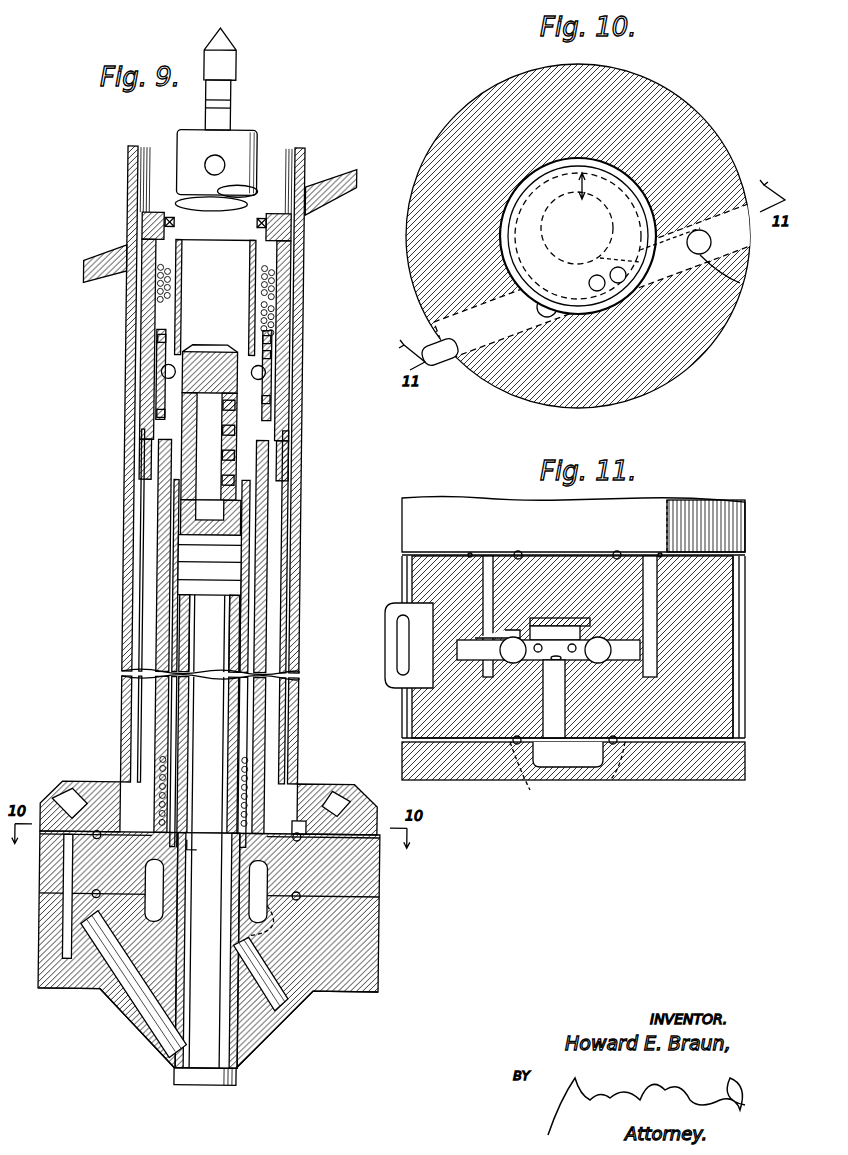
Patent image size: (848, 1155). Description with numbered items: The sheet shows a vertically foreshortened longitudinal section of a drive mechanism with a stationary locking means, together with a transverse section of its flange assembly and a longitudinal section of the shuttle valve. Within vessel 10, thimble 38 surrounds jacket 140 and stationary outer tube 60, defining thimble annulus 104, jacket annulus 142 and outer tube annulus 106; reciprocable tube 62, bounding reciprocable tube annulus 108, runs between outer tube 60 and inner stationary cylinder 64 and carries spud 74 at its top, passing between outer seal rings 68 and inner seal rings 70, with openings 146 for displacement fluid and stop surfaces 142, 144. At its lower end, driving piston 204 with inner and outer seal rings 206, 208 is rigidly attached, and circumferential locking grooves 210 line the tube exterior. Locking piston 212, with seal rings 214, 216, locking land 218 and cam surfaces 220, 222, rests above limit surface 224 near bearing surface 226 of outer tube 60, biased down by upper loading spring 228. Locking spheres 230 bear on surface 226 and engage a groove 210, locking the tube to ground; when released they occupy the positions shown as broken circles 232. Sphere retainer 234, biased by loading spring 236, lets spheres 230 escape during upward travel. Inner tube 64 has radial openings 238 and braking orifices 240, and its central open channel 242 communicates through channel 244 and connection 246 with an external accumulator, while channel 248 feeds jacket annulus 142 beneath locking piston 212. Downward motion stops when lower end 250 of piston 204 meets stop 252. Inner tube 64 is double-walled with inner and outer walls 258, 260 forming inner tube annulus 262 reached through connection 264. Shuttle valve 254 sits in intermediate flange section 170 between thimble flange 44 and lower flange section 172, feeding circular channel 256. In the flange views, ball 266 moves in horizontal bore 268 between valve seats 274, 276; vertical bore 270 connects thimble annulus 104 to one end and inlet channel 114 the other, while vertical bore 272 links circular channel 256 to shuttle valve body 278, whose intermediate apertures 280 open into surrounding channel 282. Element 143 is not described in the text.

In FIG. 9, the vessel 10 is at (335, 172).
In FIG. 9, the thimble 38 is at (130, 182).
In FIG. 9, the thimble flange 44 is at (78, 783).
In FIG. 10, the thimble flange 44 is at (700, 125).
In FIG. 11, the thimble flange 44 is at (740, 512).
In FIG. 9, the stationary outer tube 60 is at (272, 515).
In FIG. 9, the reciprocable tube 62 is at (250, 262).
In FIG. 9, the inner stationary cylinder 64 is at (168, 448).
In FIG. 9, the outer seal rings 68 is at (150, 222).
In FIG. 9, the inner seal rings 70 is at (205, 352).
In FIG. 9, the spud 74 is at (236, 62).
In FIG. 9, the thimble annulus 104 is at (305, 257).
In FIG. 10, the thimble annulus 104 is at (500, 251).
In FIG. 9, the outer tube annulus 106 is at (252, 542).
In FIG. 9, the reciprocable tube annulus 108 is at (248, 635).
In FIG. 9, the inlet channel 114 is at (345, 795).
In FIG. 10, the inlet channel 114 is at (742, 284).
In FIG. 11, the inlet channel 114 is at (650, 612).
In FIG. 9, the jacket 140 is at (288, 490).
In FIG. 9, the jacket annulus 142 is at (162, 576).
In FIG. 9, the collar 143 is at (288, 692).
In FIG. 9, the stop surface 144 is at (215, 442).
In FIG. 9, the openings 146 is at (225, 160).
In FIG. 9, the intermediate flange section 170 is at (375, 885).
In FIG. 11, the intermediate flange section 170 is at (740, 697).
In FIG. 9, the lower flange section 172 is at (370, 965).
In FIG. 11, the lower flange section 172 is at (702, 770).
In FIG. 9, the driving piston 204 is at (254, 745).
In FIG. 9, the inner seal ring 206 is at (212, 853).
In FIG. 9, the outer seal ring 208 is at (175, 770).
In FIG. 9, the locking grooves 210 is at (232, 352).
In FIG. 9, the locking piston 212 is at (160, 395).
In FIG. 9, the inner seal ring 214 is at (266, 425).
In FIG. 9, the outer seal ring 216 is at (265, 360).
In FIG. 9, the locking land 218 is at (268, 335).
In FIG. 9, the cam surface 220 is at (162, 332).
In FIG. 9, the cam surface 222 is at (162, 420).
In FIG. 9, the locking piston limit surface 224 is at (250, 470).
In FIG. 9, the bearing surface 226 is at (262, 400).
In FIG. 9, the upper loading spring 228 is at (276, 303).
In FIG. 9, the locking spheres 230 is at (164, 372).
In FIG. 9, the broken circles 232 is at (268, 372).
In FIG. 9, the sphere retainer 234 is at (158, 296).
In FIG. 9, the loading spring 236 is at (282, 283).
In FIG. 9, the radial openings 238 is at (192, 505).
In FIG. 9, the braking orifices 240 is at (190, 478).
In FIG. 9, the central open channel 242 is at (205, 655).
In FIG. 9, the channel 244 is at (140, 1000).
In FIG. 9, the connection 246 is at (70, 800).
In FIG. 9, the channel 248 is at (80, 855).
In FIG. 9, the lower end 250 is at (268, 820).
In FIG. 9, the stop 252 is at (200, 880).
In FIG. 9, the shuttle valve 254 is at (278, 905).
In FIG. 9, the circular channel 256 is at (258, 935).
In FIG. 10, the circular channel 256 is at (588, 175).
In FIG. 11, the circular channel 256 is at (545, 770).
In FIG. 9, the inner wall 258 is at (195, 612).
In FIG. 9, the outer wall 260 is at (192, 636).
In FIG. 9, the inner tube annulus 262 is at (195, 690).
In FIG. 9, the connection 264 is at (283, 1012).
In FIG. 10, the ball 266 is at (605, 290).
In FIG. 11, the ball 266 is at (515, 663).
In FIG. 10, the horizontal bore 268 is at (712, 330).
In FIG. 11, the horizontal bore 268 is at (595, 663).
In FIG. 10, the vertical bore 270 is at (552, 318).
In FIG. 11, the vertical bore 270 is at (483, 585).
In FIG. 10, the vertical bore 272 is at (612, 262).
In FIG. 11, the vertical bore 272 is at (565, 718).
In FIG. 10, the valve seat 274 is at (600, 300).
In FIG. 10, the valve seat 276 is at (655, 230).
In FIG. 11, the shuttle valve body 278 is at (510, 630).
In FIG. 11, the intermediate apertures 280 is at (598, 626).
In FIG. 11, the surrounding channel 282 is at (553, 618).